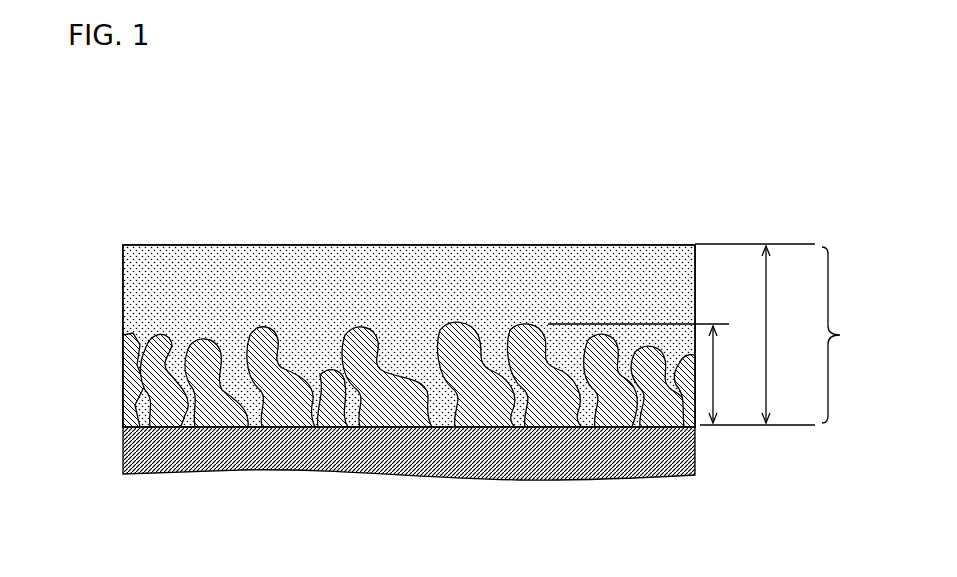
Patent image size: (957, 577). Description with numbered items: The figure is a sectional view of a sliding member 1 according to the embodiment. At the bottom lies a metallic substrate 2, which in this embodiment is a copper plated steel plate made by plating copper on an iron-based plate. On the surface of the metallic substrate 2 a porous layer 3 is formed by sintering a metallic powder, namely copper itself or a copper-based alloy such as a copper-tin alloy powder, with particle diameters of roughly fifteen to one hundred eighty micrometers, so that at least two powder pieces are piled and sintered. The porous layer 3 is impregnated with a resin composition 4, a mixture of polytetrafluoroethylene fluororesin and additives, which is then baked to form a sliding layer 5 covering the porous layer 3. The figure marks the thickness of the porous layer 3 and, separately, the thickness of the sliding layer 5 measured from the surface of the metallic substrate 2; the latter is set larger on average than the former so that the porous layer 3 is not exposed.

The sliding member 1 is at (188, 220).
The metallic substrate 2 is at (123, 448).
The porous layer 3 is at (138, 392).
The resin composition 4 is at (137, 273).
The sliding layer 5 is at (840, 335).